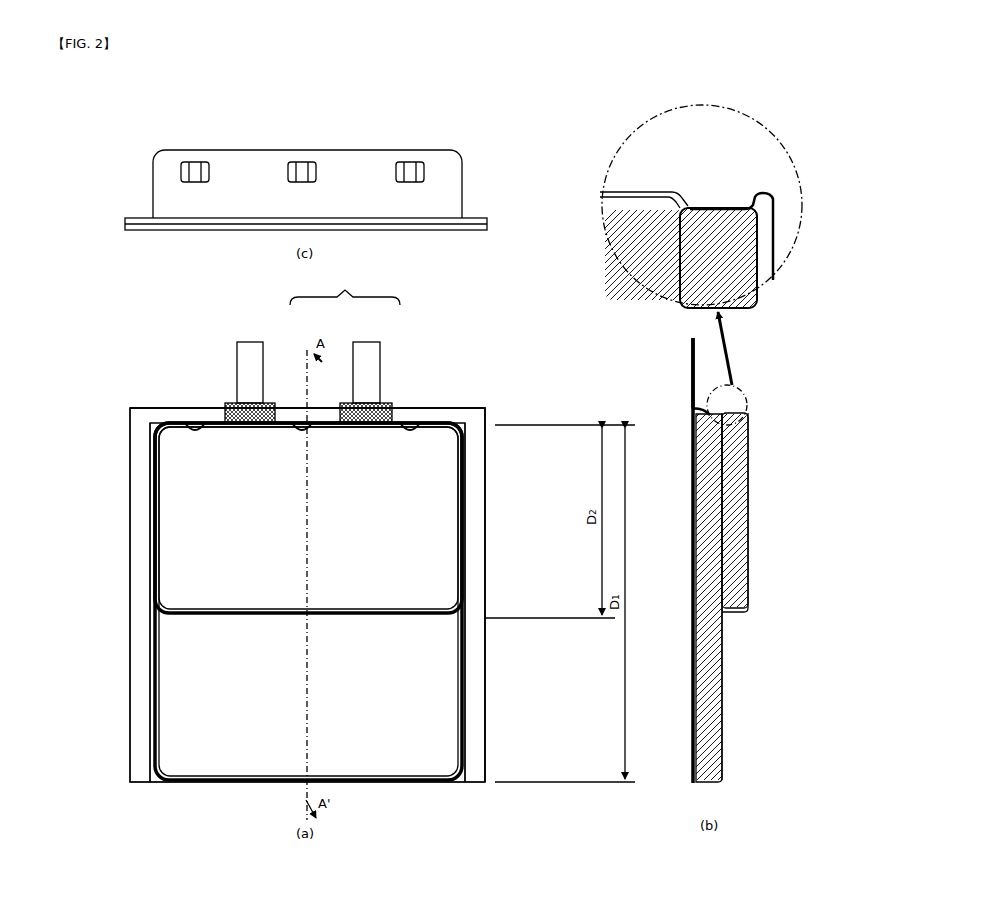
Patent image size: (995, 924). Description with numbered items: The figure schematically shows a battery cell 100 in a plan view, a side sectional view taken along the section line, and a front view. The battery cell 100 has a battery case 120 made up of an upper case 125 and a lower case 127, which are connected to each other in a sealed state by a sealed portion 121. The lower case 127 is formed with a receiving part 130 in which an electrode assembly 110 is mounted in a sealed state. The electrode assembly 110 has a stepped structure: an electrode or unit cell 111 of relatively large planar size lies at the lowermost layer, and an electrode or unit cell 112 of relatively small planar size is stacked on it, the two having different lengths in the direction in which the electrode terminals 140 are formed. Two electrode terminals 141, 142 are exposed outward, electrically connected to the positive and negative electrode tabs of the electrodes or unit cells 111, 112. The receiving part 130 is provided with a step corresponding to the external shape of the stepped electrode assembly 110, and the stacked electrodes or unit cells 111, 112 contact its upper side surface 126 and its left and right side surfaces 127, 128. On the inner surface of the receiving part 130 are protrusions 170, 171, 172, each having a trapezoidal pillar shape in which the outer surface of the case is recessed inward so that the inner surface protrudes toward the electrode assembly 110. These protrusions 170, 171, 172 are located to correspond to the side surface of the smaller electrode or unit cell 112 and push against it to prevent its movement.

The battery cell 100 is at (266, 466).
The electrode assembly 110 is at (454, 484).
The electrode or unit cell 111 is at (445, 690).
The electrode or unit cell 112 is at (405, 528).
The battery case 120 is at (488, 416).
The sealed portion 121 is at (477, 585).
The upper case 125 is at (425, 237).
The upper side surface 126 is at (360, 175).
The lower case 127 is at (475, 202).
The side surface 128 is at (465, 543).
The receiving part 130 is at (468, 448).
The electrode terminals 140 is at (692, 348).
The electrode terminal 141 is at (250, 358).
The electrode terminal 142 is at (367, 358).
The protrusion 170 is at (202, 166).
The protrusion 171 is at (305, 166).
The protrusion 172 is at (420, 166).